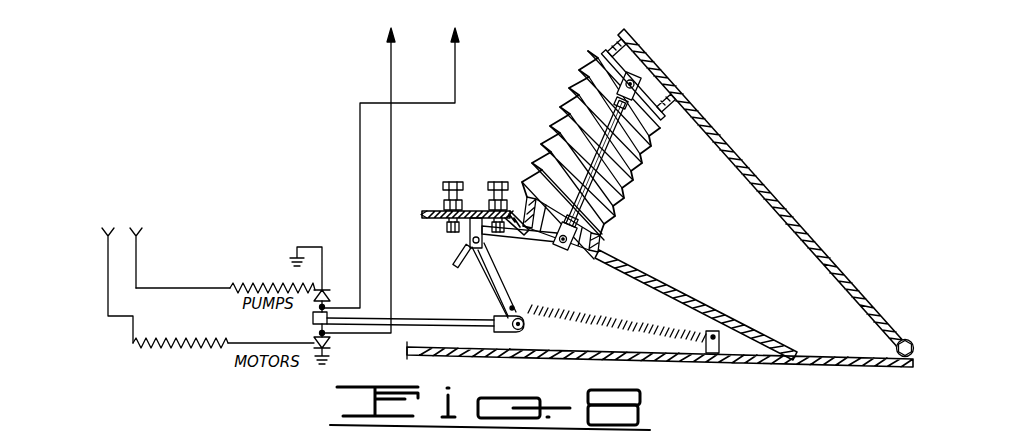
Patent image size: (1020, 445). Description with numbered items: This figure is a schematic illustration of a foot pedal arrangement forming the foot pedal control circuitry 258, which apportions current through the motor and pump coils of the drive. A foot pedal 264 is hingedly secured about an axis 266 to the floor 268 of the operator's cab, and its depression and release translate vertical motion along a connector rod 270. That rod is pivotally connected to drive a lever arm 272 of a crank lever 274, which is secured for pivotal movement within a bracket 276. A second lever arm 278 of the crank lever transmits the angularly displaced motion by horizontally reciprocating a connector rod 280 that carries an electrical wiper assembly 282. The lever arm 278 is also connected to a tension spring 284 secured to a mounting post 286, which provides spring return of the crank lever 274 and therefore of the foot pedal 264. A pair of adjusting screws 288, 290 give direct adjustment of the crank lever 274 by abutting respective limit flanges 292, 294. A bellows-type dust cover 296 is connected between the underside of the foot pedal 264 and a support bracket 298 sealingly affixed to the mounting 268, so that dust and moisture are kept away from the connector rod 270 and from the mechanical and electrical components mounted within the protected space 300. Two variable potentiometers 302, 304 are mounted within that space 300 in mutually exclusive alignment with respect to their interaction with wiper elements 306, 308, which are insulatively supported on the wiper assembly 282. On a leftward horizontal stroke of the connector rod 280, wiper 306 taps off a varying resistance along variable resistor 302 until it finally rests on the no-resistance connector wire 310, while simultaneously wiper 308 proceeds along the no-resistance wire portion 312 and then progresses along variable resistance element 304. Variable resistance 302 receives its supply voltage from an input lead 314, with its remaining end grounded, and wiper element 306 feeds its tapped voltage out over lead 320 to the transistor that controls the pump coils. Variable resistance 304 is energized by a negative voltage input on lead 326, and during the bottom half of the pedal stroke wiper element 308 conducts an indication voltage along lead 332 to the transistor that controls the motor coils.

The foot pedal control circuitry 258 is at (268, 140).
The foot pedal 264 is at (710, 125).
The axis 266 is at (896, 348).
The floor 268 is at (740, 357).
The connector rod 270 is at (641, 151).
The lever arm 272 is at (543, 243).
The crank lever 274 is at (475, 270).
The bracket 276 is at (470, 233).
The lever arm 278 is at (510, 298).
The connector rod 280 is at (417, 321).
The electrical wiper assembly 282 is at (313, 318).
The tension spring 284 is at (600, 326).
The mounting post 286 is at (706, 352).
The adjusting screw 288 is at (498, 180).
The adjusting screw 290 is at (452, 181).
The limit flange 292 is at (497, 248).
The limit flange 294 is at (453, 260).
The bellows-type dust cover 296 is at (630, 212).
The support bracket 298 is at (685, 300).
The space 300 is at (575, 347).
The variable potentiometer 302 is at (262, 287).
The variable potentiometer 304 is at (180, 343).
The wiper element 306 is at (323, 296).
The wiper element 308 is at (328, 341).
The connector wire 310 is at (158, 287).
The no-resistance wire portion 312 is at (263, 341).
The input lead 314 is at (140, 236).
The lead 320 is at (456, 63).
The lead 326 is at (108, 265).
The lead 332 is at (391, 66).